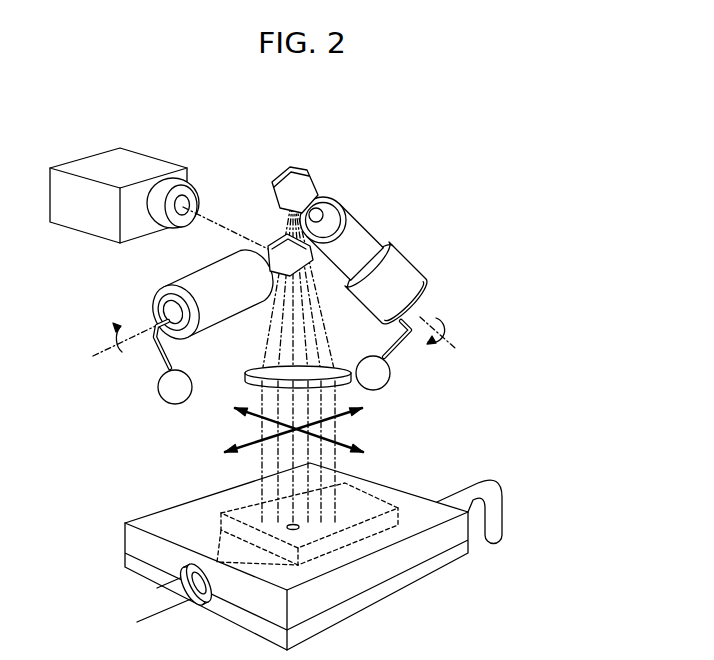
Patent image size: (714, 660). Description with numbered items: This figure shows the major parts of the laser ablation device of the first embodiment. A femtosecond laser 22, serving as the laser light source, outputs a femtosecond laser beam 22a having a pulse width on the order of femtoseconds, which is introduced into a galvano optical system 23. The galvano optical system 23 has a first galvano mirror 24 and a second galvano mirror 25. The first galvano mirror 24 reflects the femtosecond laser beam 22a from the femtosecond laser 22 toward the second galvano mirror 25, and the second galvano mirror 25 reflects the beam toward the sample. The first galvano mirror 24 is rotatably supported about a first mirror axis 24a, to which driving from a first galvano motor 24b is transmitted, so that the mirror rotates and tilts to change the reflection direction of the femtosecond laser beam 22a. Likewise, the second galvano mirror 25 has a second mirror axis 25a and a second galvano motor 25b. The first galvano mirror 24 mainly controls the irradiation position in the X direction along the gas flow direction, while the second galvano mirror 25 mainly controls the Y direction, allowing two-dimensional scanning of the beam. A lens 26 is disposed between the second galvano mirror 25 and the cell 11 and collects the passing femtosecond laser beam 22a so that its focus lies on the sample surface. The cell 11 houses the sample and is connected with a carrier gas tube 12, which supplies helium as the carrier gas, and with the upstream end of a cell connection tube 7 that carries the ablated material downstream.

The cell connection tube 7 is at (145, 597).
The cell 11 is at (192, 510).
The carrier gas tube 12 is at (493, 490).
The femtosecond laser 22 is at (91, 162).
The femtosecond laser beam 22a is at (219, 221).
The galvano optical system 23 is at (410, 198).
The first galvano mirror 24 is at (265, 247).
The first mirror axis 24a is at (135, 330).
The first galvano motor 24b is at (196, 362).
The second galvano mirror 25 is at (302, 181).
The second mirror axis 25a is at (452, 336).
The second galvano motor 25b is at (395, 356).
The lens 26 is at (247, 372).